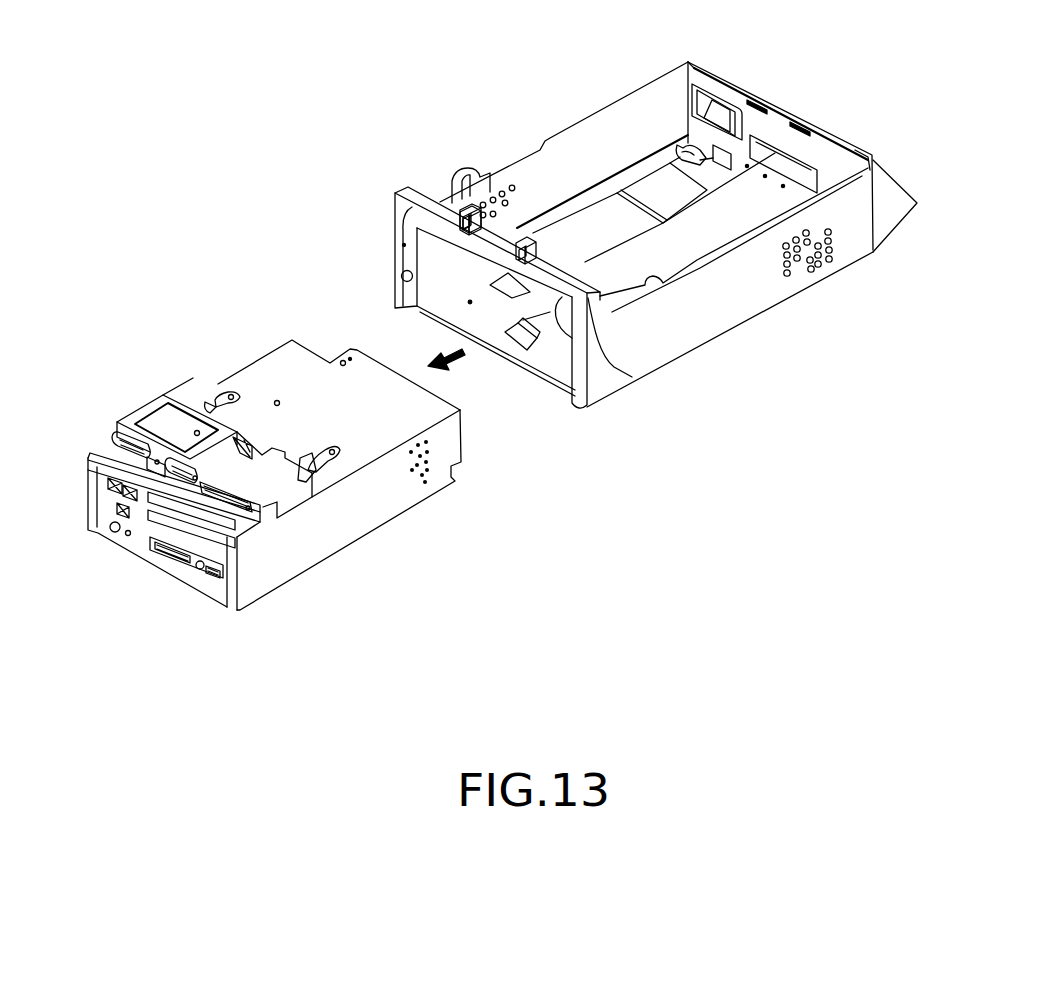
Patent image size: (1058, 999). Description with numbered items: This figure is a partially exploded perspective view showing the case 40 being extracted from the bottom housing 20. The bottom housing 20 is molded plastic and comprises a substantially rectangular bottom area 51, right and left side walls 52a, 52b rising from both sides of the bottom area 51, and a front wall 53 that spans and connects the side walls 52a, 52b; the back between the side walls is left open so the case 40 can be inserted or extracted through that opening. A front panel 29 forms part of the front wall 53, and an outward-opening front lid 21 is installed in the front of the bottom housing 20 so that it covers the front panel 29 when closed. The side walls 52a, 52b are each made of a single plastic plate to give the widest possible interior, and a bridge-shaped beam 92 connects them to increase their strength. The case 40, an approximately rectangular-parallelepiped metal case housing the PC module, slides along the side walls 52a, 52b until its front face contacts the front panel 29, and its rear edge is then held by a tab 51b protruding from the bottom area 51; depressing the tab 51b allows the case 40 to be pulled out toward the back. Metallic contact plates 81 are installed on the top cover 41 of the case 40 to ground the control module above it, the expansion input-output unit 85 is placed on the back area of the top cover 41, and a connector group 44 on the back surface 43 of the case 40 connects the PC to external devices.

The bottom housing 20 is at (837, 278).
The front lid 21 is at (890, 217).
The front panel 29 is at (773, 127).
The case 40 is at (362, 543).
The top cover 41 is at (263, 365).
The back surface 43 is at (140, 543).
The connector group 44 is at (207, 570).
The bottom area 51 is at (568, 375).
The tab 51b is at (517, 338).
The left side wall 52a is at (527, 157).
The right side wall 52b is at (730, 283).
The front wall 53 is at (838, 136).
The contact plates 81 is at (308, 455).
The expansion input-output unit 85 is at (140, 403).
The bridge-shaped beam 92 is at (632, 377).